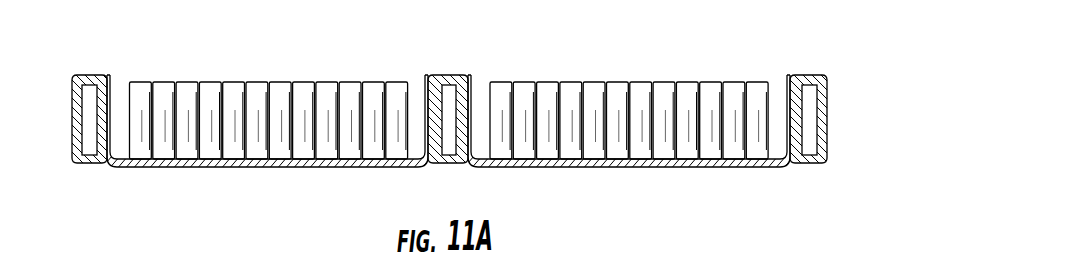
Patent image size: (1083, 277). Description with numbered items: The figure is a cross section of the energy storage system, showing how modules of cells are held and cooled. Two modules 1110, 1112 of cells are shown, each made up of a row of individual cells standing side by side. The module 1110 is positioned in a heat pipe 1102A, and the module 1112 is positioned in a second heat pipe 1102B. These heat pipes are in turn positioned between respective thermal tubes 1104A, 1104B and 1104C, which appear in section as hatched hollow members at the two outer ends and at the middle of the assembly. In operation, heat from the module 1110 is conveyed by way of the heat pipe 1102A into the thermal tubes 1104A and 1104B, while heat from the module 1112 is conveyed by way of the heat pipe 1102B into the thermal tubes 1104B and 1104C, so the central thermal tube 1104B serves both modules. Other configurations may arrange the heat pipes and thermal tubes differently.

The heat pipe 1102A is at (283, 162).
The heat pipe 1102B is at (613, 165).
The thermal tube 1104A is at (85, 164).
The thermal tube 1104B is at (450, 165).
The thermal tube 1104C is at (817, 167).
The module of cells 1110 is at (225, 72).
The module of cells 1112 is at (582, 73).